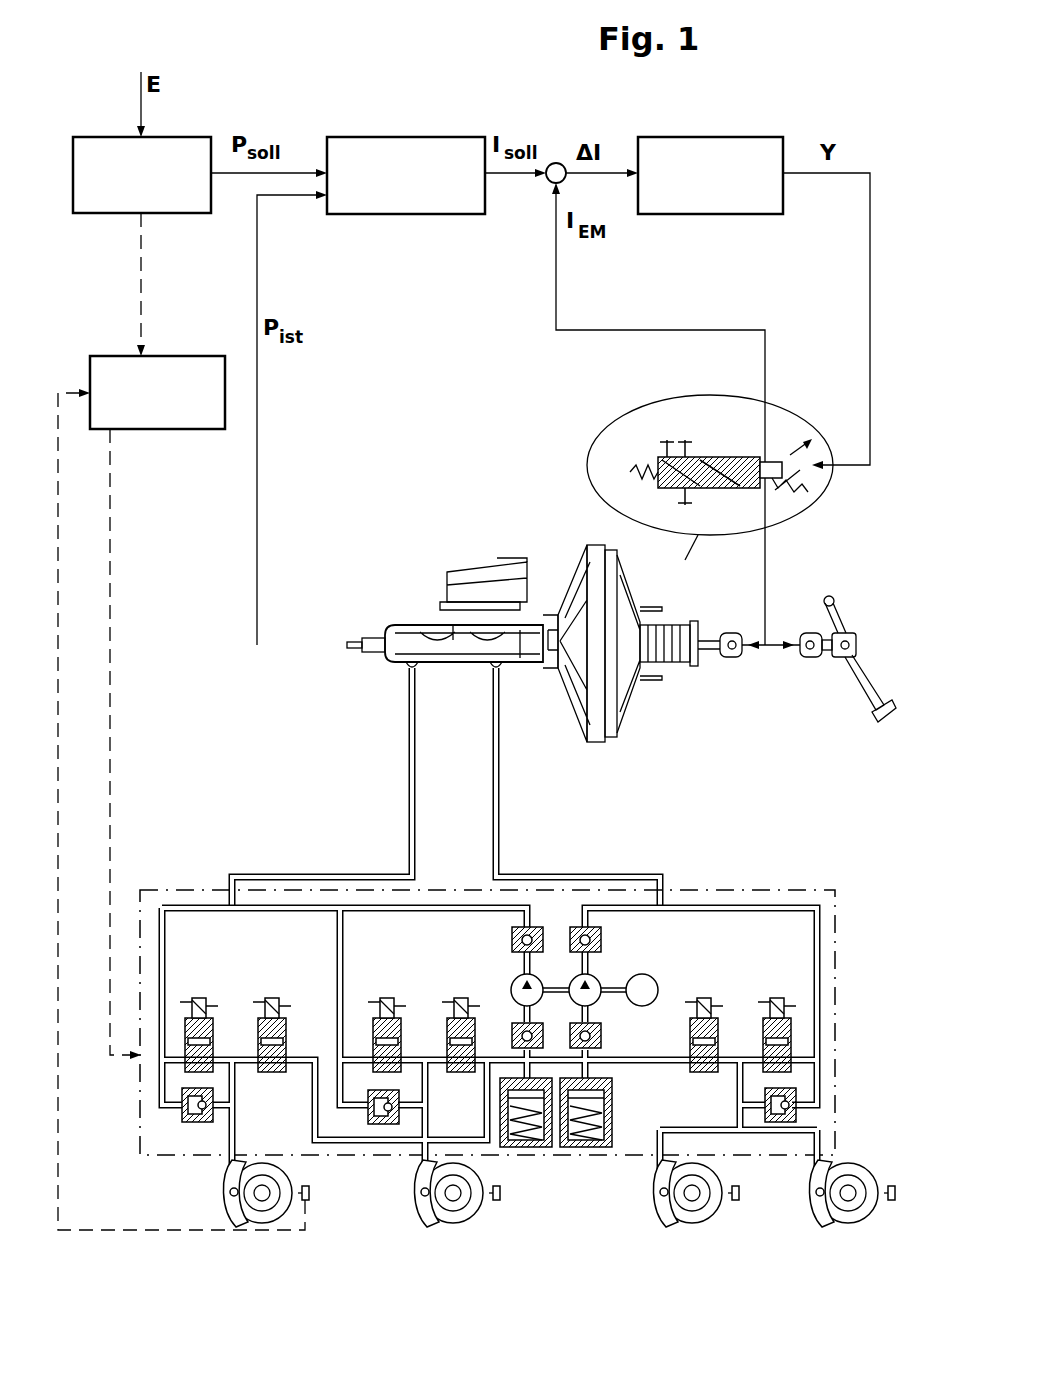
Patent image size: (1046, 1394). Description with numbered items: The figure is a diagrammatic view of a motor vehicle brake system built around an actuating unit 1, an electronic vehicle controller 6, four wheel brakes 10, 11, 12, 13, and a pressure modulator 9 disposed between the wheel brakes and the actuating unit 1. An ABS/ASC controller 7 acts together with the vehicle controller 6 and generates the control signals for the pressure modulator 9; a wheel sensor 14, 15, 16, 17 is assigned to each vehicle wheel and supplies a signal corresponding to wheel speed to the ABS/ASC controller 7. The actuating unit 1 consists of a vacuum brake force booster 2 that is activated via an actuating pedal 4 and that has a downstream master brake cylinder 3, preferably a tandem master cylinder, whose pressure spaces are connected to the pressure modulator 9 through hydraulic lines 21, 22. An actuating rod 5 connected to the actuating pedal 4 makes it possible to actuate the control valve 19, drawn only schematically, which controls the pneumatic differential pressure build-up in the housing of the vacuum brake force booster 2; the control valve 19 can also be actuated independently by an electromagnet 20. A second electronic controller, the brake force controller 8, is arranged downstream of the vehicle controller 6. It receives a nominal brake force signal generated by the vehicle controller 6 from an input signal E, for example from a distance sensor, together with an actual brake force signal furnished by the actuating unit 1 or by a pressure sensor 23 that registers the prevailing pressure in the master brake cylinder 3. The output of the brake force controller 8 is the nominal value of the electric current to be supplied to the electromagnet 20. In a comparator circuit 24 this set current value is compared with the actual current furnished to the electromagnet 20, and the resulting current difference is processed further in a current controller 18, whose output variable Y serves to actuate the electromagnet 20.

The actuating unit 1 is at (548, 540).
The vacuum brake force booster 2 is at (634, 705).
The master brake cylinder 3 is at (403, 612).
The actuating pedal 4 is at (852, 672).
The actuating rod 5 is at (730, 657).
The electronic vehicle controller 6 is at (95, 137).
The ABS/ASC controller 7 is at (174, 356).
The brake force controller 8 is at (400, 137).
The pressure modulator 9 is at (838, 985).
The wheel brake 10 is at (228, 1198).
The wheel brake 11 is at (420, 1212).
The wheel brake 12 is at (660, 1212).
The wheel brake 13 is at (815, 1212).
The wheel sensor 14 is at (309, 1193).
The wheel sensor 15 is at (500, 1193).
The wheel sensor 16 is at (739, 1193).
The wheel sensor 17 is at (895, 1186).
The current controller 18 is at (730, 137).
The control valve 19 is at (722, 468).
The electromagnet 20 is at (772, 458).
The hydraulic line 21 is at (503, 797).
The hydraulic line 22 is at (405, 797).
The pressure sensor 23 is at (373, 654).
The comparator circuit 24 is at (556, 163).